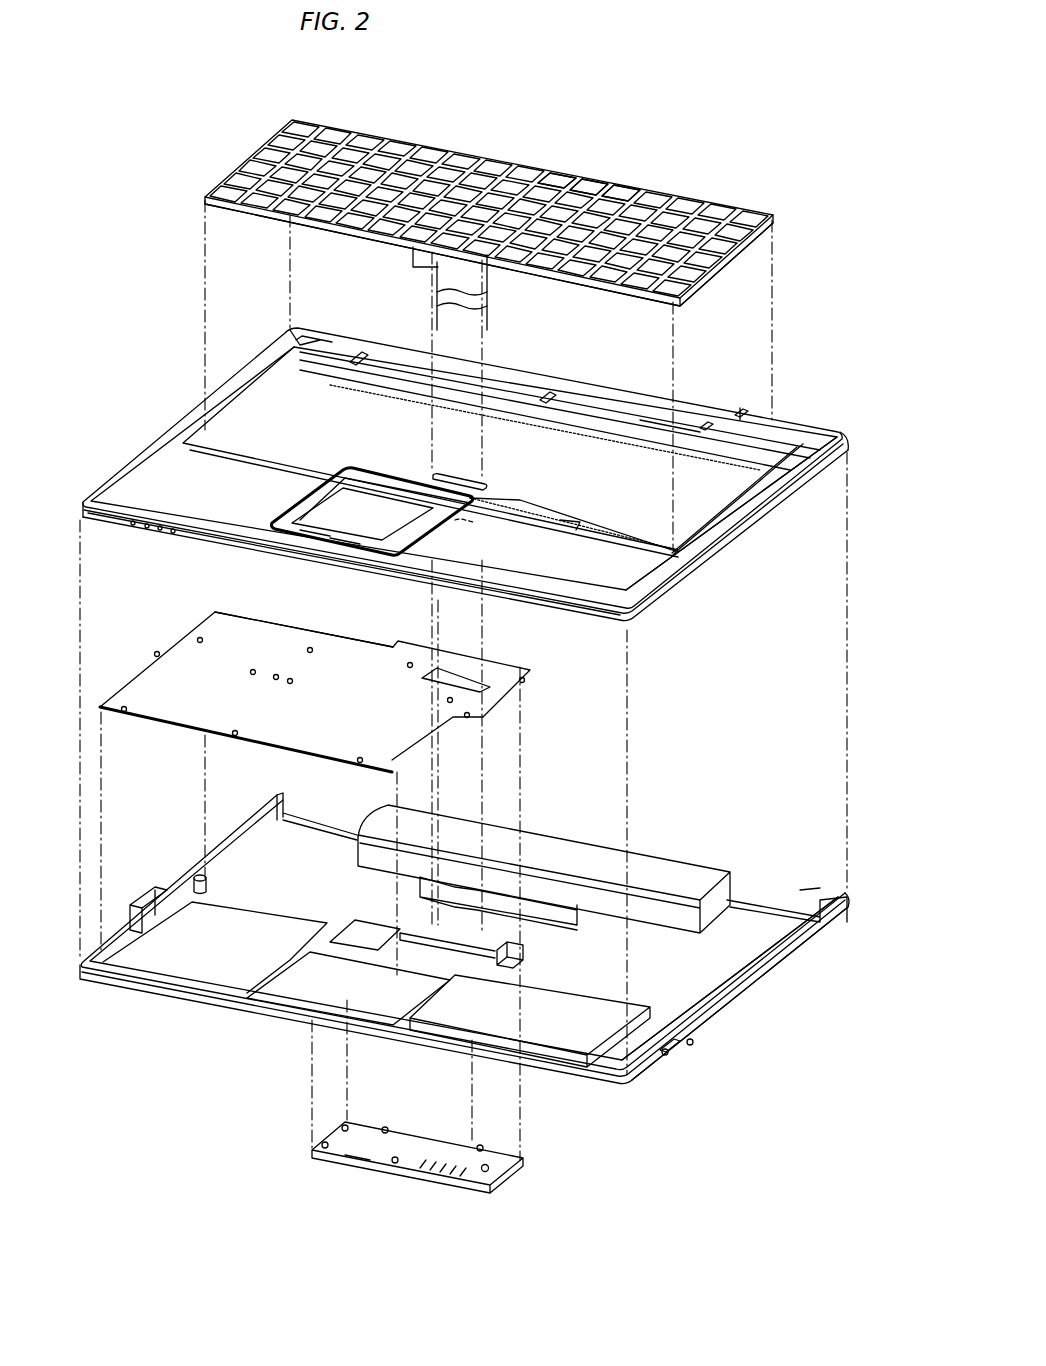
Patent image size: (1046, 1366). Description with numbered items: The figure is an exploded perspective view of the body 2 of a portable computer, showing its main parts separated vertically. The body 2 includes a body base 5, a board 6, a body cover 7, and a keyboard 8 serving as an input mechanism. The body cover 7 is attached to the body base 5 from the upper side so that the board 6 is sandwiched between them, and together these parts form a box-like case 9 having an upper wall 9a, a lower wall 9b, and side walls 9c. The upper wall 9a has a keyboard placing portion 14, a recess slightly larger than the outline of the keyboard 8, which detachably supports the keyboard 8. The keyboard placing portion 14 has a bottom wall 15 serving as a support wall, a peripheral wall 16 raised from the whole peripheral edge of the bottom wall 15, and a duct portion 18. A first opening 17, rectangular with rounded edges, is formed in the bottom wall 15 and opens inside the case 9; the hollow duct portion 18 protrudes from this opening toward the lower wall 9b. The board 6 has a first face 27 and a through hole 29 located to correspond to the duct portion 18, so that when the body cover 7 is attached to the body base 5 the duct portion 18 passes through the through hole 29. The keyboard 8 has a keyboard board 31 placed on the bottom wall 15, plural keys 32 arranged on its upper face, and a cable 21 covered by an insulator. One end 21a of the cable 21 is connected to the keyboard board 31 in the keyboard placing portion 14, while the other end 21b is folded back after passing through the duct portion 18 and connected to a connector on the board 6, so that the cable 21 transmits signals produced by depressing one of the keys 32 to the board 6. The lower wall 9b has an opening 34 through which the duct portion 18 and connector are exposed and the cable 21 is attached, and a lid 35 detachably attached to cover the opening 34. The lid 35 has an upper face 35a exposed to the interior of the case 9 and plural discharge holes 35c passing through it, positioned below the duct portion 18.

The body 2 is at (74, 196).
The body base 5 is at (152, 960).
The board 6 is at (190, 658).
The body cover 7 is at (162, 472).
The keyboard 8 is at (300, 136).
The case 9 is at (848, 434).
The upper wall 9a is at (627, 575).
The lower wall 9b is at (705, 975).
The side walls 9c is at (750, 526).
The keyboard placing portion 14 is at (600, 457).
The bottom wall 15 is at (550, 485).
The peripheral wall 16 is at (264, 387).
The first opening 17 is at (430, 480).
The duct portion 18 is at (460, 522).
The cable 21 is at (433, 266).
The one end of the cable 21a is at (498, 281).
The other end of the cable 21b is at (498, 320).
The first face 27 is at (260, 642).
The through hole 29 is at (432, 680).
The keyboard board 31 is at (697, 290).
The keys 32 is at (617, 197).
The opening 34 is at (462, 962).
The lid 35 is at (357, 1163).
The upper face 35a is at (357, 1132).
The discharge holes 35c is at (458, 1166).